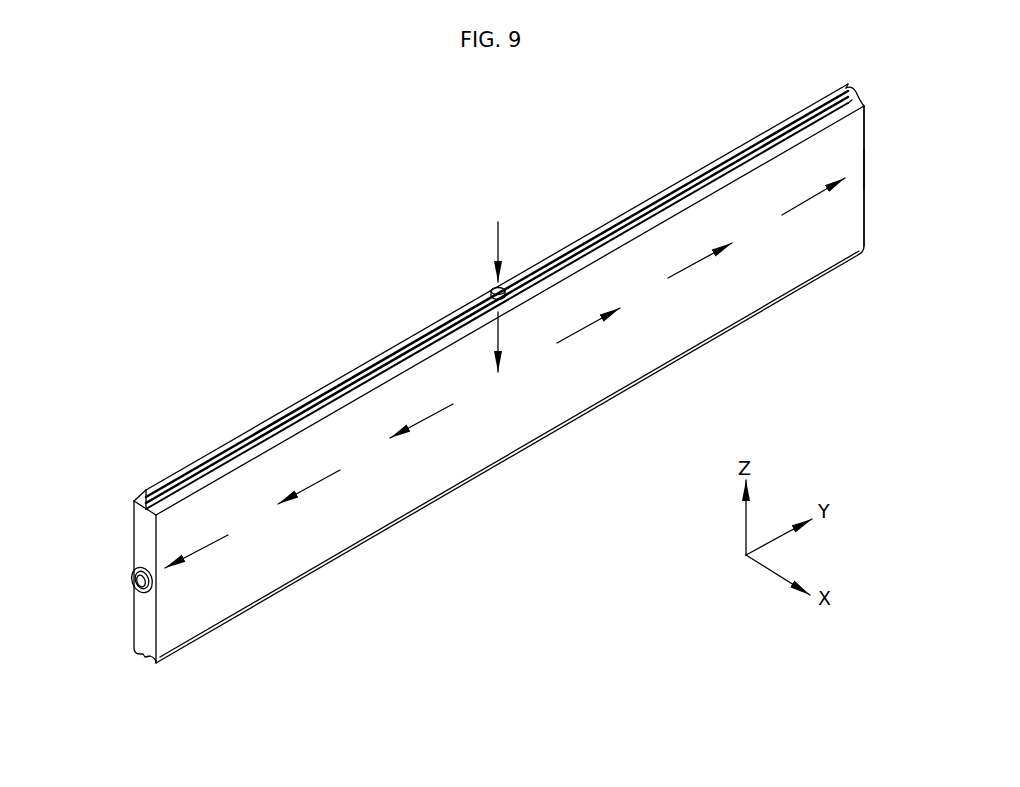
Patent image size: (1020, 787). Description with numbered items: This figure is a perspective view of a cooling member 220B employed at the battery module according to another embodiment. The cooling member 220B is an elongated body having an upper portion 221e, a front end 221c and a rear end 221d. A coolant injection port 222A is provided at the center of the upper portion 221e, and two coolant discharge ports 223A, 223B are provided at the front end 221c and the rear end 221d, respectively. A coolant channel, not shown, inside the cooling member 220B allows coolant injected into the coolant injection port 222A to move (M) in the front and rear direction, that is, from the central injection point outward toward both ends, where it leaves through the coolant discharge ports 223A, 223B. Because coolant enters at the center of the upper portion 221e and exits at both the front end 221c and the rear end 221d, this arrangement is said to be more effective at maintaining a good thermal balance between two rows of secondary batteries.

The cooling member 220B is at (499, 373).
The front end 221c is at (145, 618).
The rear end 221d is at (866, 210).
The upper portion 221e is at (575, 250).
The coolant injection port 222A is at (493, 292).
The coolant discharge port 223A is at (133, 579).
The coolant discharge port 223B is at (866, 170).
The movement of coolant M is at (423, 420).